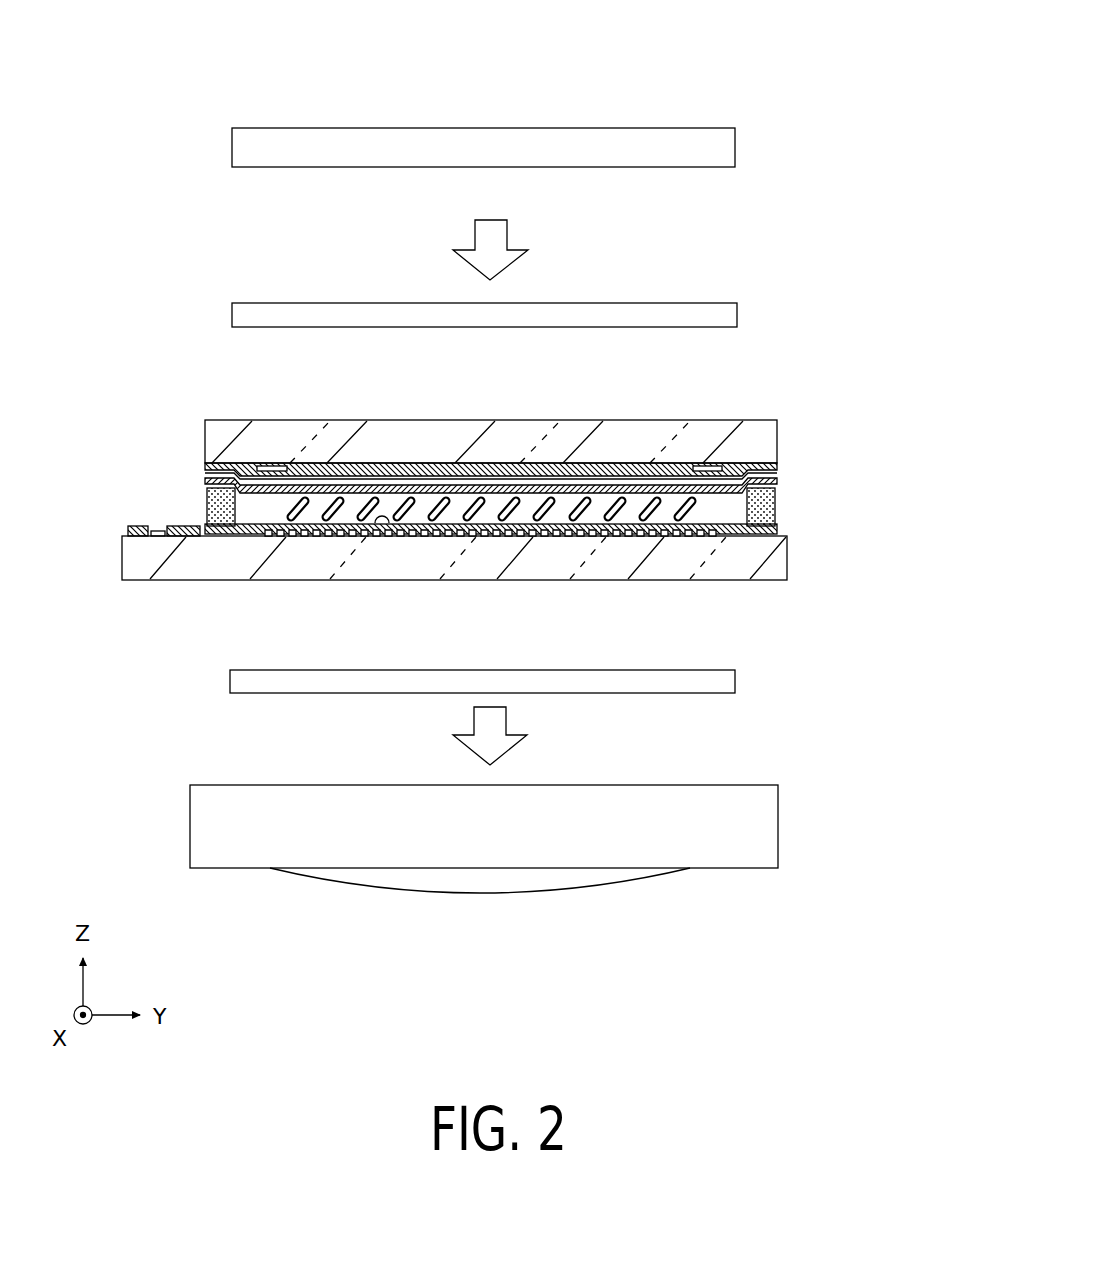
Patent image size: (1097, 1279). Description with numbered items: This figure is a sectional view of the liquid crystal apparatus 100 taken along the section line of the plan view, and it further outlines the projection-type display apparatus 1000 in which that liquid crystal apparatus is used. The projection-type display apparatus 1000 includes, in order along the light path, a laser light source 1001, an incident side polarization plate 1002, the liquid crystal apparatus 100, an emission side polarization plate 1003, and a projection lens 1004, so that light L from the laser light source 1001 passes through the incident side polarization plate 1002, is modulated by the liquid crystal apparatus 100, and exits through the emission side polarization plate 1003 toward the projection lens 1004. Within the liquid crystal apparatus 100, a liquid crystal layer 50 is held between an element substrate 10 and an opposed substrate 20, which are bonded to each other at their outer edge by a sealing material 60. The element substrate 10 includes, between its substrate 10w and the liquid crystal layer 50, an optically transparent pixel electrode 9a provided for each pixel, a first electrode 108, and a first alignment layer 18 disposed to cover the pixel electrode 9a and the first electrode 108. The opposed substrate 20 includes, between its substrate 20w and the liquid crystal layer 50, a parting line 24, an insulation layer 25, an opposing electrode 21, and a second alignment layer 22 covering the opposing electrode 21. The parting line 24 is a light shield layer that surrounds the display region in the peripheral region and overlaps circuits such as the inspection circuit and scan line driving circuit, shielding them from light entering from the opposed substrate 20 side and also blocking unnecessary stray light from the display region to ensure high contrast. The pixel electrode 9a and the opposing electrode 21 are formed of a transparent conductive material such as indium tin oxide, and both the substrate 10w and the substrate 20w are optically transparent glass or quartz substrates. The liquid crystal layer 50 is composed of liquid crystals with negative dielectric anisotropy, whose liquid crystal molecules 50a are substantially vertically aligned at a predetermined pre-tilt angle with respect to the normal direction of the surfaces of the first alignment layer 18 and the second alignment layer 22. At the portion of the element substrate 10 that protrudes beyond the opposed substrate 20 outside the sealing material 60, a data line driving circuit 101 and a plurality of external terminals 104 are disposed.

The projection-type display apparatus 1000 is at (795, 32).
The laser light source 1001 is at (733, 148).
The incident side polarization plate 1002 is at (733, 311).
The emission side polarization plate 1003 is at (733, 678).
The projection lens 1004 is at (776, 826).
The liquid crystal apparatus 100 is at (890, 306).
The opposed substrate 20 is at (532, 425).
The substrate 20w is at (450, 442).
The second alignment layer 22 is at (508, 478).
The opposing electrode 21 is at (637, 470).
The insulation layer 25 is at (377, 487).
The parting line 24 is at (264, 469).
The sealing material 60 is at (777, 502).
The liquid crystal layer 50 is at (491, 574).
The liquid crystal molecules 50a is at (584, 520).
The first alignment layer 18 is at (382, 524).
The element substrate 10 is at (476, 552).
The substrate 10w is at (479, 560).
The first electrode 108 is at (264, 535).
The pixel electrode 9a is at (334, 537).
The external terminals 104 is at (136, 525).
The data line driving circuit 101 is at (181, 525).